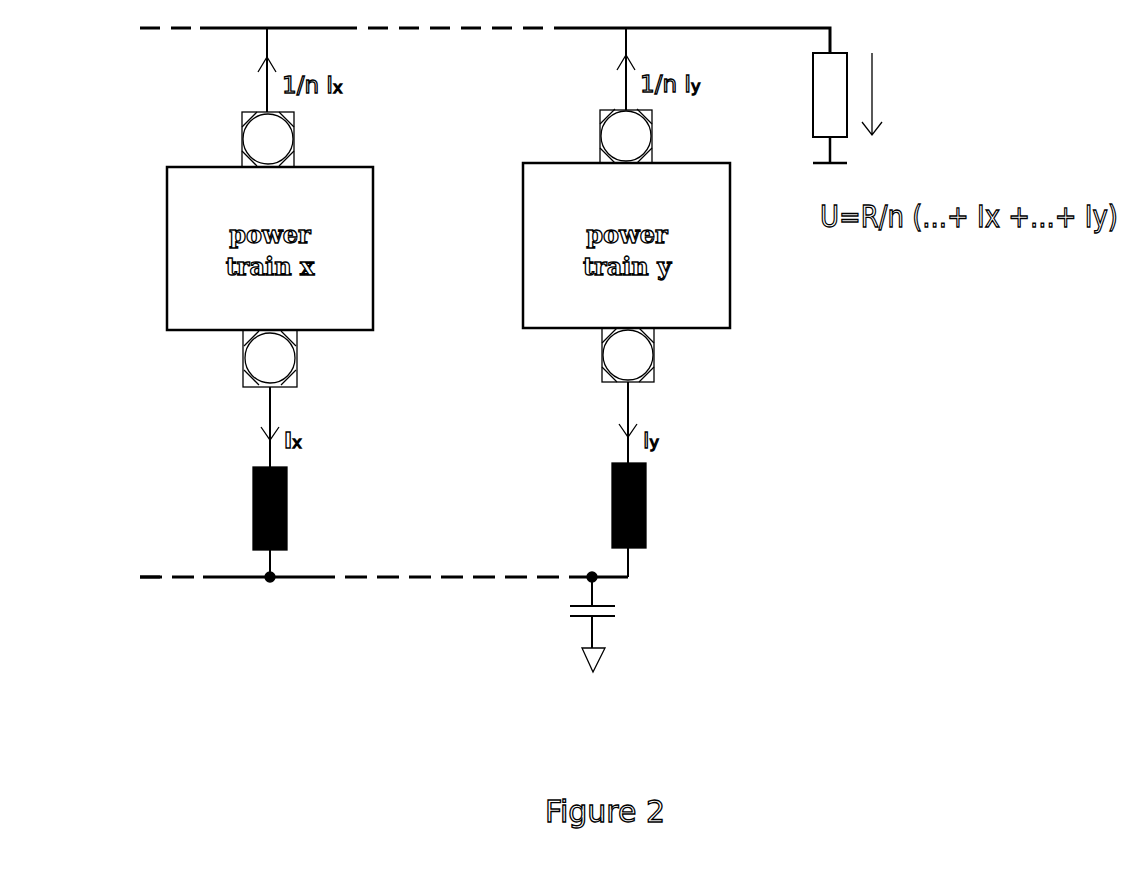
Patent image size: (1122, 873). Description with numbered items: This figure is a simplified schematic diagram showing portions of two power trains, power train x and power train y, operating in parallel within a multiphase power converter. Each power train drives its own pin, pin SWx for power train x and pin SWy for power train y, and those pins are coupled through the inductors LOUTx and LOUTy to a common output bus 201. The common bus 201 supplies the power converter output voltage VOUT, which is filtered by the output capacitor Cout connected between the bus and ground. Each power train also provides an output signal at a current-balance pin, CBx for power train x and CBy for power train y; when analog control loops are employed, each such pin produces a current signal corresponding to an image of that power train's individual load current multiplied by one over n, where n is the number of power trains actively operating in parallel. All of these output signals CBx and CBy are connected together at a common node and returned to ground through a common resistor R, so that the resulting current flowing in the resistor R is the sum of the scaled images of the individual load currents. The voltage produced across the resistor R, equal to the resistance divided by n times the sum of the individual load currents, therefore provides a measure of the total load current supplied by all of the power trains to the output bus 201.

The common output bus 201 is at (213, 578).
The output signal pin of power train x CBx is at (228, 137).
The output signal pin of power train y CBy is at (585, 130).
The pin of power train x SWx is at (302, 373).
The pin of power train y SWy is at (665, 370).
The inductor LOUTx is at (302, 528).
The inductor LOUTy is at (662, 528).
The output capacitor Cout is at (560, 625).
The power converter output voltage VOUT is at (140, 580).
The common resistor R is at (830, 108).